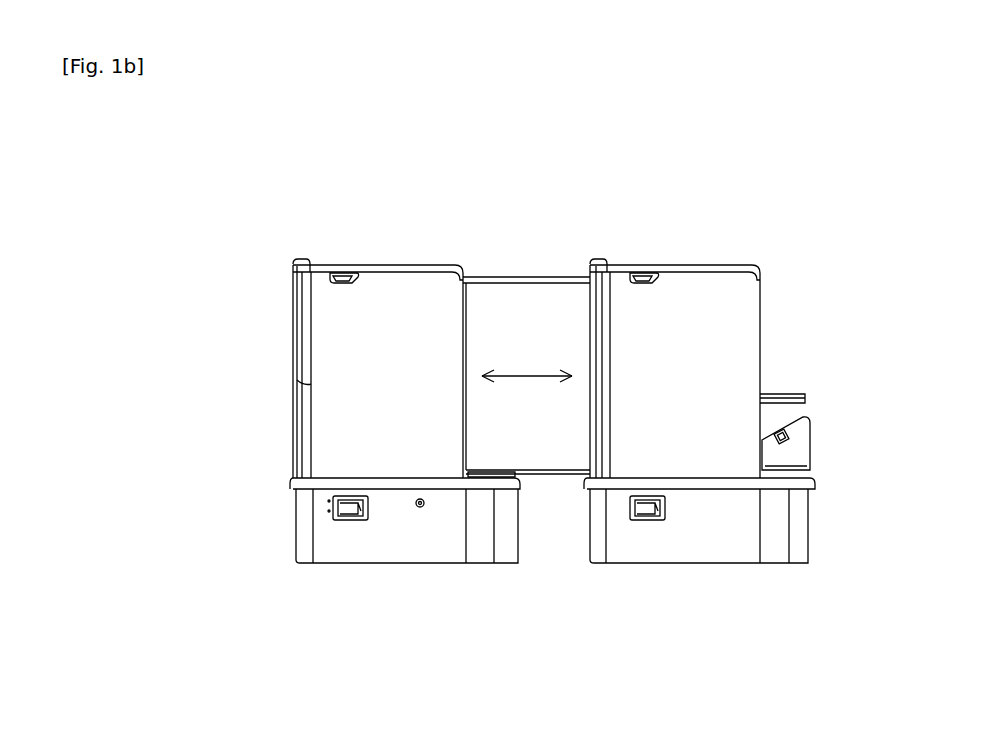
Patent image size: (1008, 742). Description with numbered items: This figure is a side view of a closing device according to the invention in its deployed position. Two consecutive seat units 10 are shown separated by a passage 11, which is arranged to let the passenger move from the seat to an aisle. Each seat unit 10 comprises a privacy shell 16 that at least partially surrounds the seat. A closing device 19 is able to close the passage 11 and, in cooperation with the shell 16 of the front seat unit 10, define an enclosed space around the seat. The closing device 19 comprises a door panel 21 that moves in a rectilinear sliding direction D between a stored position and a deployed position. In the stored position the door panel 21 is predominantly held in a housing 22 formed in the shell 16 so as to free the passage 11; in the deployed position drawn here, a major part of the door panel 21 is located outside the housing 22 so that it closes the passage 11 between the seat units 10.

The seat unit 10 is at (537, 305).
The passage 11 is at (540, 553).
The privacy shell 16 is at (410, 295).
The closing device 19 is at (517, 275).
The door panel 21 is at (548, 305).
The housing 22 is at (330, 417).
The sliding direction D is at (530, 376).